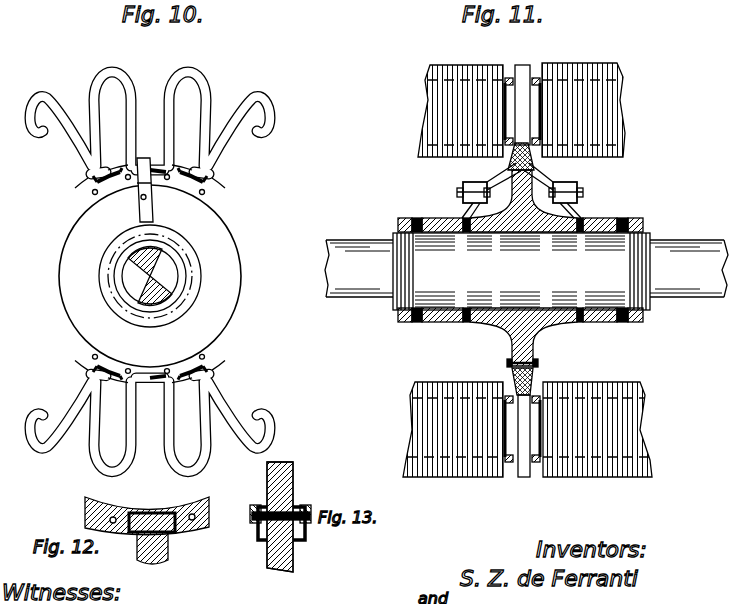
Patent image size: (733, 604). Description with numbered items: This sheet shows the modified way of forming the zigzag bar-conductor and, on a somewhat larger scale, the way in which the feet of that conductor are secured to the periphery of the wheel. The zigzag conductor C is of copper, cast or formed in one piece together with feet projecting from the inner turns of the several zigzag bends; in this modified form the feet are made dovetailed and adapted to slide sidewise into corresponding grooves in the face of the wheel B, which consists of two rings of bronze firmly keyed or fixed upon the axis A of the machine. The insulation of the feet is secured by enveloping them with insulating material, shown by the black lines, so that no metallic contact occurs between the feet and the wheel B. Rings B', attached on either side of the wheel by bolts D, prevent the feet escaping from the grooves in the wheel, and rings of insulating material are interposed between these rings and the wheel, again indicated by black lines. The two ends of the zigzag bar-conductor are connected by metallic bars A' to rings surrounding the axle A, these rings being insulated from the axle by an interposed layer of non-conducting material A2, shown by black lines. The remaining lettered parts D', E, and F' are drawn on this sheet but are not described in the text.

In FIG. 10, the axis A is at (150, 276).
In FIG. 11, the axis A is at (526, 271).
In FIG. 10, the metallic bars A' is at (154, 190).
In FIG. 11, the metallic bars A' is at (529, 188).
In FIG. 11, the layer of non-conducting material A2 is at (652, 214).
In FIG. 10, the wheel B is at (149, 274).
In FIG. 12, the wheel B is at (147, 510).
In FIG. 13, the wheel B is at (280, 508).
In FIG. 11, the rings B' is at (521, 268).
In FIG. 13, the rings B' is at (276, 533).
In FIG. 10, the zigzag conductor C is at (150, 260).
In FIG. 11, the zigzag conductor C is at (522, 278).
In FIG. 12, the zigzag conductor C is at (152, 547).
In FIG. 11, the bolts D is at (539, 363).
In FIG. 13, the bolts D is at (273, 502).
In FIG. 13, the nut D' is at (294, 499).
In FIG. 11, the coil winding E is at (524, 270).
In FIG. 11, the flange piece F' is at (522, 255).